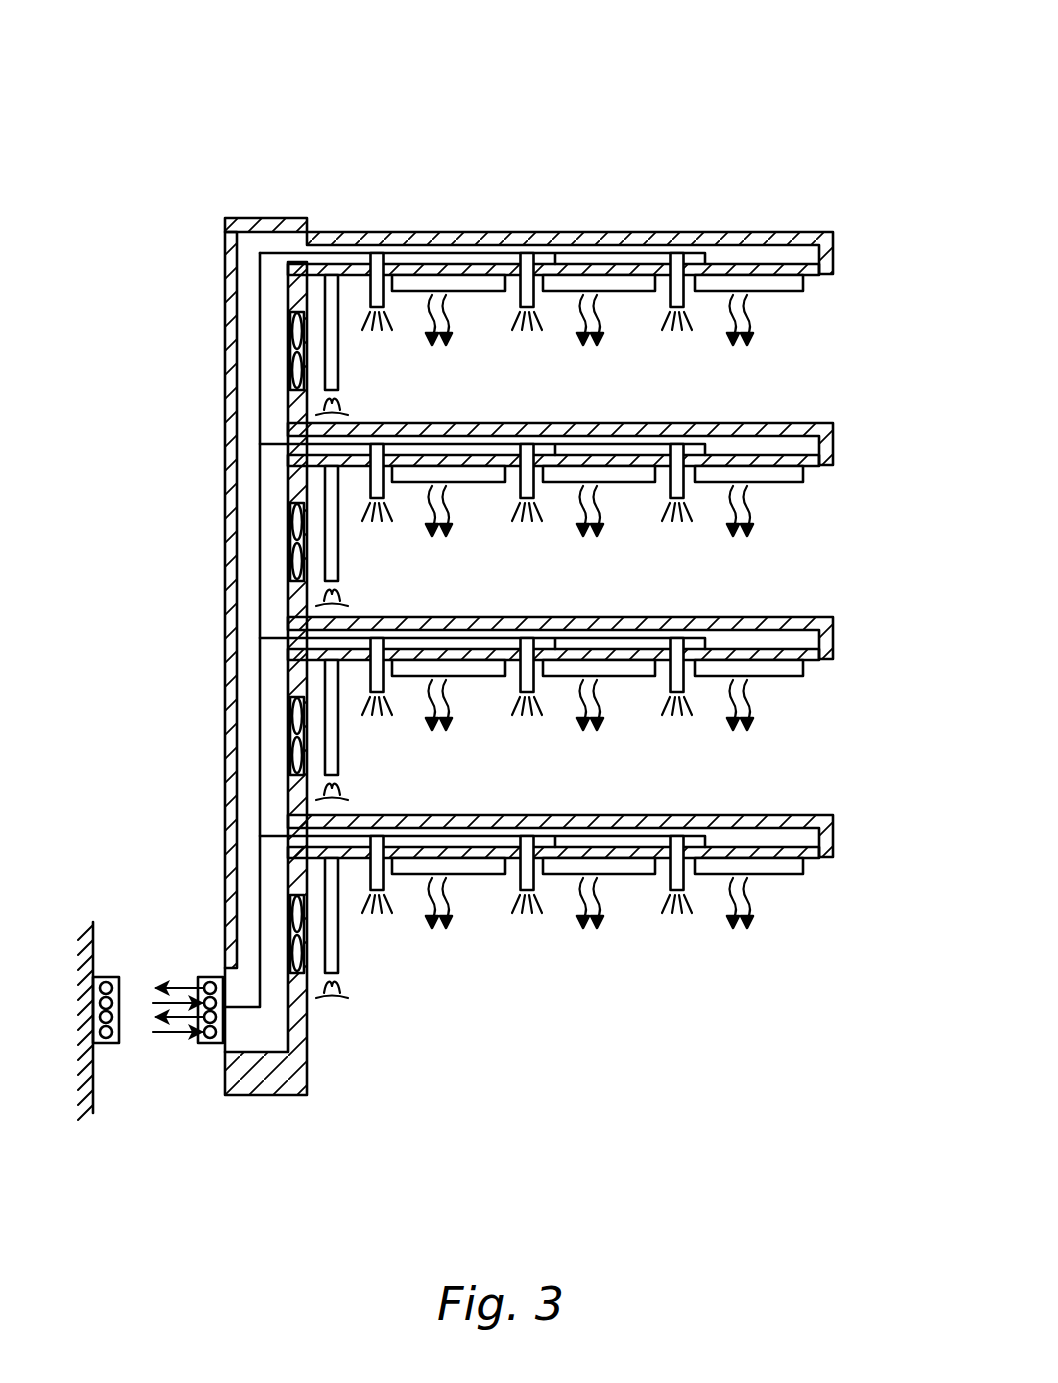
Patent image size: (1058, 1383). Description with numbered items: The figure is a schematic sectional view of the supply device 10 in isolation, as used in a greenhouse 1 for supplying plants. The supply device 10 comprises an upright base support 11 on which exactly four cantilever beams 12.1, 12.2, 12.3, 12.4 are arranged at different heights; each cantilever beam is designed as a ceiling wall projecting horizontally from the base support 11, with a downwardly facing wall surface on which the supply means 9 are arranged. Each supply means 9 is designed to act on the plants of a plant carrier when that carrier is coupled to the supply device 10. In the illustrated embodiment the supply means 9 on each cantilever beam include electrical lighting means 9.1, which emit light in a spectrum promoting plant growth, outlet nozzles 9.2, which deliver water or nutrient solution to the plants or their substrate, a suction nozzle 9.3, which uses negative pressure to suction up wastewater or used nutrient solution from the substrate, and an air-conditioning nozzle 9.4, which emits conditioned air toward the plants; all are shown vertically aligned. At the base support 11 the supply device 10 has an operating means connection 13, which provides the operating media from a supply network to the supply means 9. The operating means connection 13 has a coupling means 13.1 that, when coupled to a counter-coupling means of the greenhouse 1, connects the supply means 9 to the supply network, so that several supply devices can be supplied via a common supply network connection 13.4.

The greenhouse 1 is at (97, 1095).
The supply means 9 is at (782, 295).
The electrical lighting means 9.1 is at (452, 280).
The outlet nozzle 9.2 is at (372, 268).
The suction nozzle 9.3 is at (336, 379).
The air-conditioning nozzle 9.4 is at (295, 350).
The supply device 10 is at (283, 137).
The base support 11 is at (226, 220).
The cantilever beam 12.1 is at (825, 821).
The cantilever beam 12.2 is at (825, 623).
The cantilever beam 12.3 is at (825, 429).
The cantilever beam 12.4 is at (825, 238).
The operating means connection 13 is at (214, 1052).
The coupling means 13.1 is at (210, 980).
The common supply network connection 13.4 is at (113, 977).